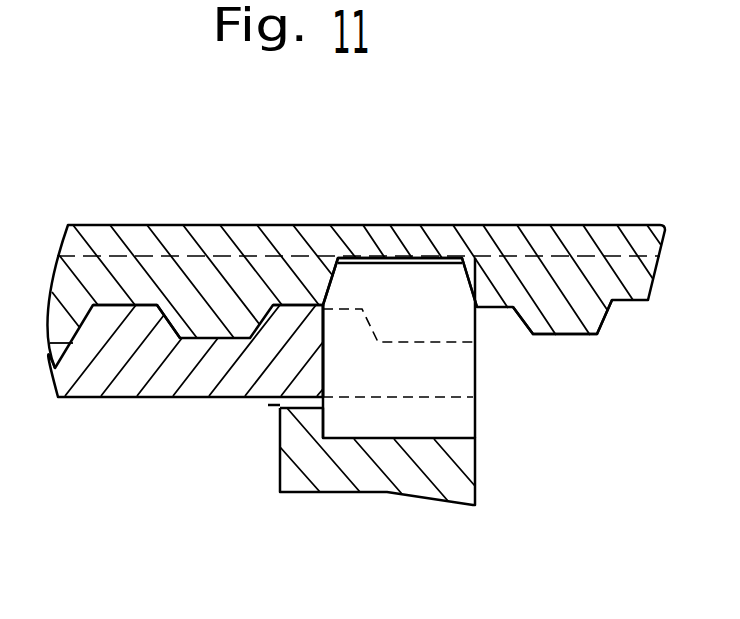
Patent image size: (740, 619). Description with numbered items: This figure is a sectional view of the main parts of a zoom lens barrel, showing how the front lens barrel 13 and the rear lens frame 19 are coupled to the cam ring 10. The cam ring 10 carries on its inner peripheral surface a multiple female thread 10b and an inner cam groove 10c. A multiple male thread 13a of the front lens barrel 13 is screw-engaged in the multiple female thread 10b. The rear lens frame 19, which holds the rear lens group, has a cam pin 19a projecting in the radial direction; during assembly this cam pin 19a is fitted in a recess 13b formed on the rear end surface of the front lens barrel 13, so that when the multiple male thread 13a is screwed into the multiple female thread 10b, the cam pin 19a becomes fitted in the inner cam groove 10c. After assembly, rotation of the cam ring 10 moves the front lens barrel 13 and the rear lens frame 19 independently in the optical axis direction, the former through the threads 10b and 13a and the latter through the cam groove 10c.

The cam ring 10 is at (575, 233).
The multiple female thread 10b is at (578, 336).
The inner cam groove 10c is at (368, 271).
The front lens barrel 13 is at (115, 390).
The multiple male thread 13a is at (125, 312).
The recess 13b is at (323, 357).
The rear lens frame 19 is at (463, 488).
The cam pin 19a is at (467, 378).